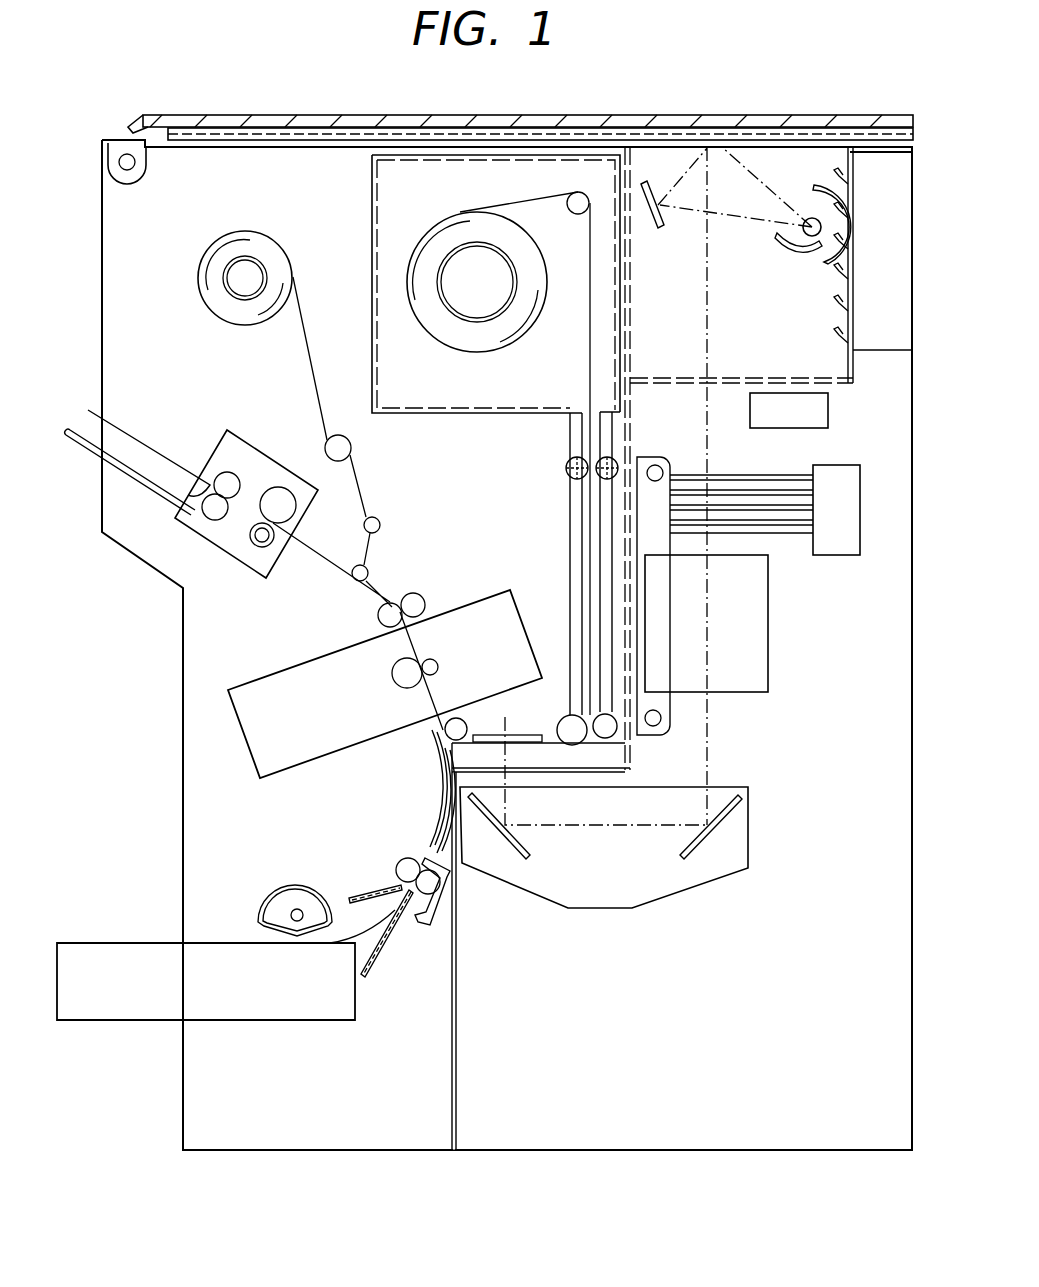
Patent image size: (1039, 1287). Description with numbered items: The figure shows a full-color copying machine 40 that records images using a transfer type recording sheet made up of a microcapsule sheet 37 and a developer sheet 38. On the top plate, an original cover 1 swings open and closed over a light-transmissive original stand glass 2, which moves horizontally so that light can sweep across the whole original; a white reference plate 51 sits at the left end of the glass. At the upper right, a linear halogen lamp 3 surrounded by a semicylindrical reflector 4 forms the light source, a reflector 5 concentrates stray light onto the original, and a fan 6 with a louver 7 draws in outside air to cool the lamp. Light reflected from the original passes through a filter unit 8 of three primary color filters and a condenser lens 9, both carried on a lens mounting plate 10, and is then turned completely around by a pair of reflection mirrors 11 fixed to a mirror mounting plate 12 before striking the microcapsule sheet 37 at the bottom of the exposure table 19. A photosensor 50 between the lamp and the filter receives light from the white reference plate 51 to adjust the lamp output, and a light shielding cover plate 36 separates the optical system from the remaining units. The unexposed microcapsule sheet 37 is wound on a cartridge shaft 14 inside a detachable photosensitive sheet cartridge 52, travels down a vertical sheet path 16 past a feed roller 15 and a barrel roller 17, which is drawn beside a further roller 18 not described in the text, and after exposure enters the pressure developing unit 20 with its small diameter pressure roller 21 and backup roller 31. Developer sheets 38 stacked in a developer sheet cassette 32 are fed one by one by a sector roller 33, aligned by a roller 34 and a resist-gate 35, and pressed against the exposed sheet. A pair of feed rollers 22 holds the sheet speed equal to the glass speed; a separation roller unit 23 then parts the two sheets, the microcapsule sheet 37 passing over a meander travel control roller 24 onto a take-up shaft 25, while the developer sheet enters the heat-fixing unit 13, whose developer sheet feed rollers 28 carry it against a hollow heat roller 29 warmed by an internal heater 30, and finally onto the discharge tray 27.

The original cover 1 is at (510, 118).
The original stand glass 2 is at (594, 133).
The halogen lamp 3 is at (806, 219).
The semicylindrical reflector 4 is at (820, 188).
The reflector 5 is at (653, 182).
The fan 6 is at (893, 175).
The louver 7 is at (848, 170).
The filter unit 8 is at (792, 533).
The condenser lens 9 is at (768, 665).
The lens mounting plate 10 is at (670, 722).
The reflection mirrors 11 is at (737, 803).
The mirror mounting plate 12 is at (748, 860).
The heat-fixing unit 13 is at (245, 430).
The cartridge shaft 14 is at (462, 300).
The feed roller 15 is at (566, 468).
The vertical sheet path 16 is at (570, 512).
The barrel roller 17 is at (572, 746).
The pressure roller 18 is at (605, 739).
The exposure table 19 is at (515, 735).
The pressure developing unit 20 is at (228, 690).
The small diameter pressure roller 21 is at (438, 667).
The feed rollers 22 is at (396, 603).
The separation roller unit 23 is at (368, 573).
The meander travel control roller 24 is at (352, 448).
The take-up shaft 25 is at (247, 262).
The discharge tray 27 is at (120, 470).
The developer sheet feed rollers 28 is at (215, 512).
The heat roller 29 is at (260, 545).
The heater 30 is at (268, 546).
The backup roller 31 is at (392, 675).
The developer sheet cassette 32 is at (255, 1020).
The sector roller 33 is at (270, 885).
The roller 34 is at (400, 862).
The resist-gate 35 is at (440, 930).
The light shielding cover plate 36 is at (456, 1025).
The microcapsule sheet 37 is at (590, 374).
The developer sheet 38 is at (350, 910).
The copying machine 40 is at (124, 132).
The photosensor 50 is at (828, 411).
The white reference plate 51 is at (200, 132).
The photosensitive sheet cartridge 52 is at (372, 236).